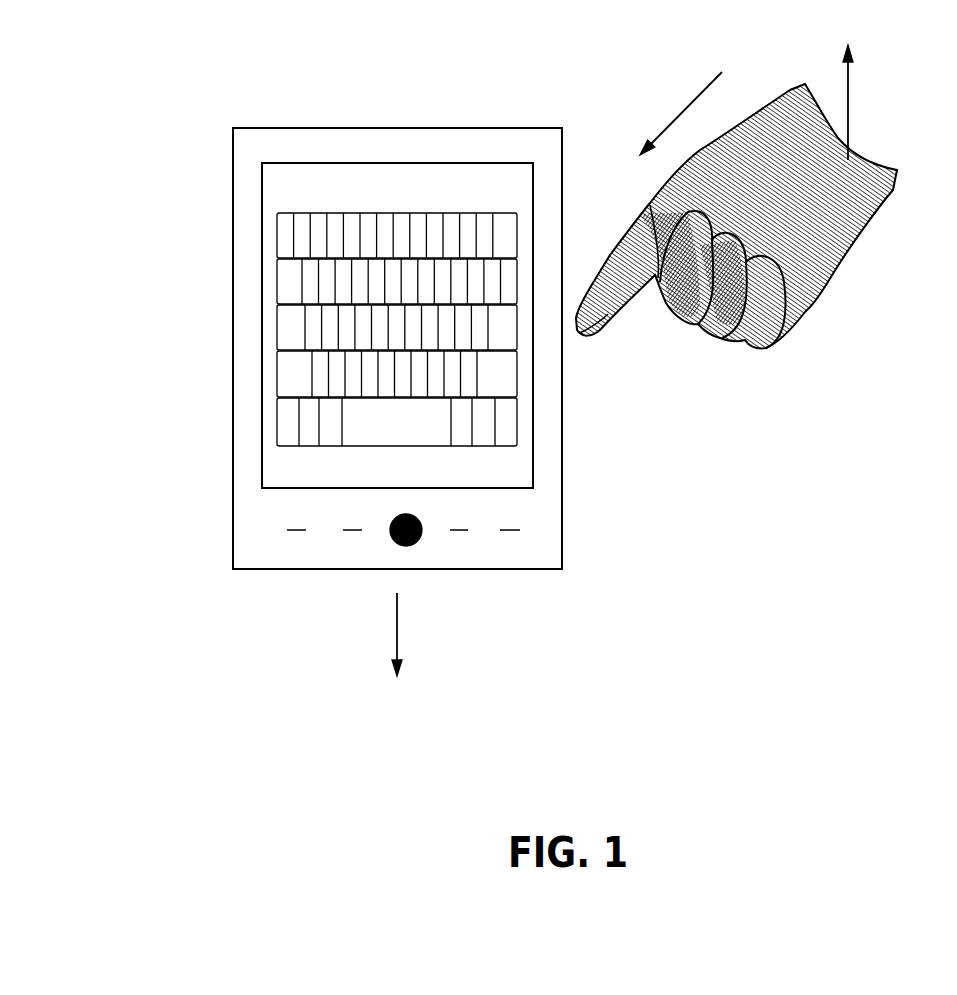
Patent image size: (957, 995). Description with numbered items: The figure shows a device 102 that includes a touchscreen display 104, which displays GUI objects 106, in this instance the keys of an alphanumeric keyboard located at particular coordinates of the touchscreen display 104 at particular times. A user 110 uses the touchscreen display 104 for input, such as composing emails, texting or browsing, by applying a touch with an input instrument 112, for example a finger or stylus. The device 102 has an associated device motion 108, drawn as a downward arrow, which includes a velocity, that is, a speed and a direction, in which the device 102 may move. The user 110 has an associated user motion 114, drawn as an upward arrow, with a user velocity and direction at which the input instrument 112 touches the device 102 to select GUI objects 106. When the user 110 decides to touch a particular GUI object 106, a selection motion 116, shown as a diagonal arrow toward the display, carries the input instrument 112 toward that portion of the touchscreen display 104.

The device 102 is at (233, 250).
The touchscreen display 104 is at (533, 233).
The GUI objects 106 is at (275, 330).
The device motion 108 is at (397, 647).
The user 110 is at (818, 298).
The input instrument 112 is at (590, 336).
The user motion 114 is at (848, 106).
The selection motion 116 is at (690, 95).